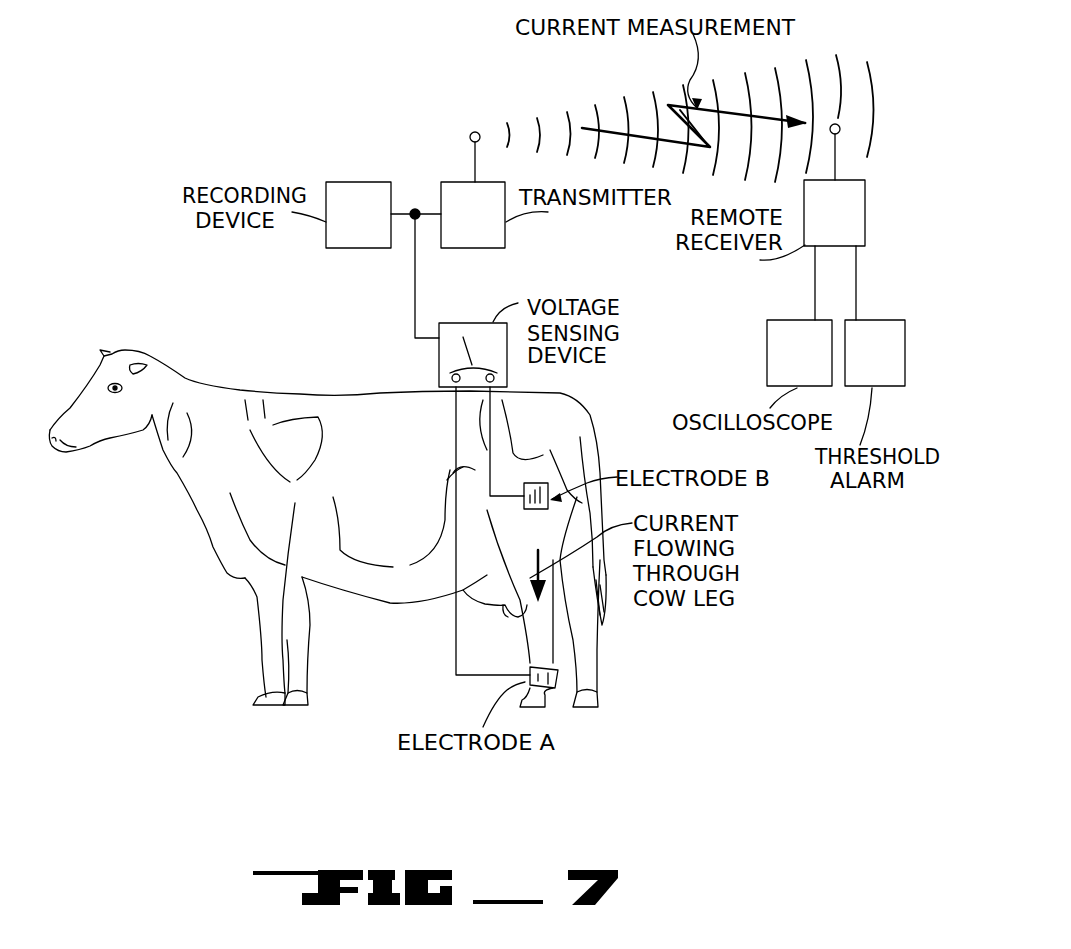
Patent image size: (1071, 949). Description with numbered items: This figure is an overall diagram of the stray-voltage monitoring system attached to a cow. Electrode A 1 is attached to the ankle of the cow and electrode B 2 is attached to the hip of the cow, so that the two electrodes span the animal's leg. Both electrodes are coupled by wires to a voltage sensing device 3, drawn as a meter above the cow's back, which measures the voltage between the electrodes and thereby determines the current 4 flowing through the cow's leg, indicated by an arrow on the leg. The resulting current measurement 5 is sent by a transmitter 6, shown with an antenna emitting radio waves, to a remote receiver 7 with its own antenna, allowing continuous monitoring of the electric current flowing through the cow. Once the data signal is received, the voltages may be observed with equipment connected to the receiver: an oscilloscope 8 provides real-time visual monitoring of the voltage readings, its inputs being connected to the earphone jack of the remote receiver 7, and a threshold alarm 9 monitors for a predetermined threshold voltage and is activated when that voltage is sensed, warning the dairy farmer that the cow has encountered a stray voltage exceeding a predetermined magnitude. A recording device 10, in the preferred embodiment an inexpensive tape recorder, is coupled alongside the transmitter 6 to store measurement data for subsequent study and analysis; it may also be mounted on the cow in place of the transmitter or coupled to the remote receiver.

The electrode A 1 is at (530, 665).
The electrode B 2 is at (528, 511).
The voltage sensing device 3 is at (478, 322).
The current 4 is at (513, 568).
The current measurement 5 is at (642, 130).
The transmitter 6 is at (506, 240).
The remote receiver 7 is at (866, 217).
The oscilloscope 8 is at (767, 372).
The threshold alarm 9 is at (885, 388).
The recording device 10 is at (362, 250).